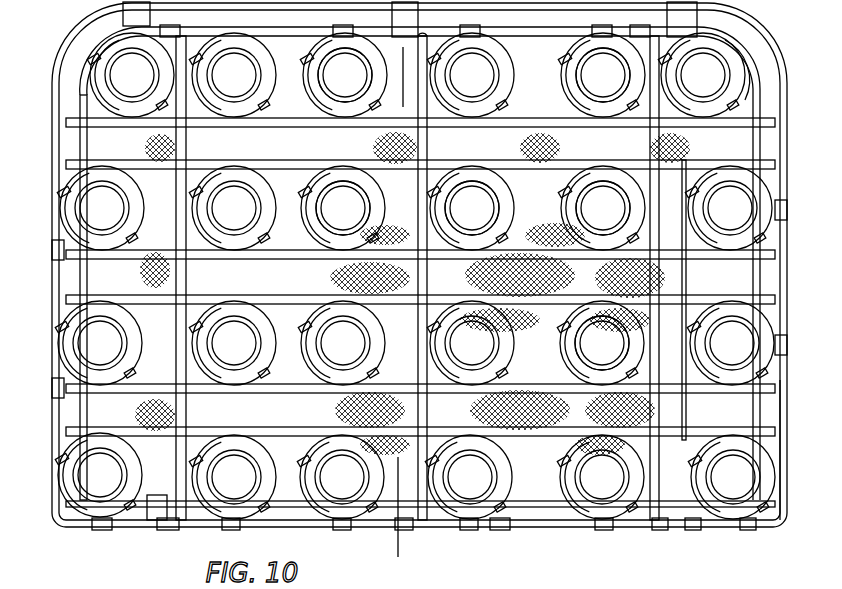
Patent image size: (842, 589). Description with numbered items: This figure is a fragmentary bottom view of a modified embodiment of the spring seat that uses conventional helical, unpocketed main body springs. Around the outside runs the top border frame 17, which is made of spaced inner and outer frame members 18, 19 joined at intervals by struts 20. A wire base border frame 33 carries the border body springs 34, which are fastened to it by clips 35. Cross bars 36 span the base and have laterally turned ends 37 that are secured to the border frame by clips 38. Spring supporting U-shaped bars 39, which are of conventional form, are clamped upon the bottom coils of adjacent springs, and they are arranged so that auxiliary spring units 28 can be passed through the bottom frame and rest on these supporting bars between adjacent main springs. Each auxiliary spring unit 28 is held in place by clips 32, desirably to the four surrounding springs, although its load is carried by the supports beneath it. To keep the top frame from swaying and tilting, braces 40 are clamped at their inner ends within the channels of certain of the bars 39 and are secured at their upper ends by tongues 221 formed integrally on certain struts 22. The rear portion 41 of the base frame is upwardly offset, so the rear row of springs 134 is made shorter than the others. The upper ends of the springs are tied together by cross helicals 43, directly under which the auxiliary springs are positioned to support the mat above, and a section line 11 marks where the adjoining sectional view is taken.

The section line 11 is at (385, 50).
The top border frame 17 is at (768, 52).
The inner frame member 18 is at (757, 98).
The outer frame member 19 is at (748, 34).
The strut 20 is at (262, 42).
The strut 22 is at (690, 530).
The auxiliary spring unit 28 is at (515, 222).
The clip 32 is at (445, 235).
The wire base border frame 33 is at (790, 400).
The border body spring 34 is at (378, 183).
The clip 35 is at (757, 330).
The cross bar 36 is at (188, 143).
The laterally turned end 37 is at (387, 40).
The clip 38 is at (640, 37).
The spring supporting U-shaped bar 39 is at (213, 280).
The brace 40 is at (685, 283).
The rear portion of the base frame 41 is at (762, 528).
The cross helical 43 is at (163, 143).
The rear row of springs 134 is at (73, 517).
The tongue 221 is at (660, 530).